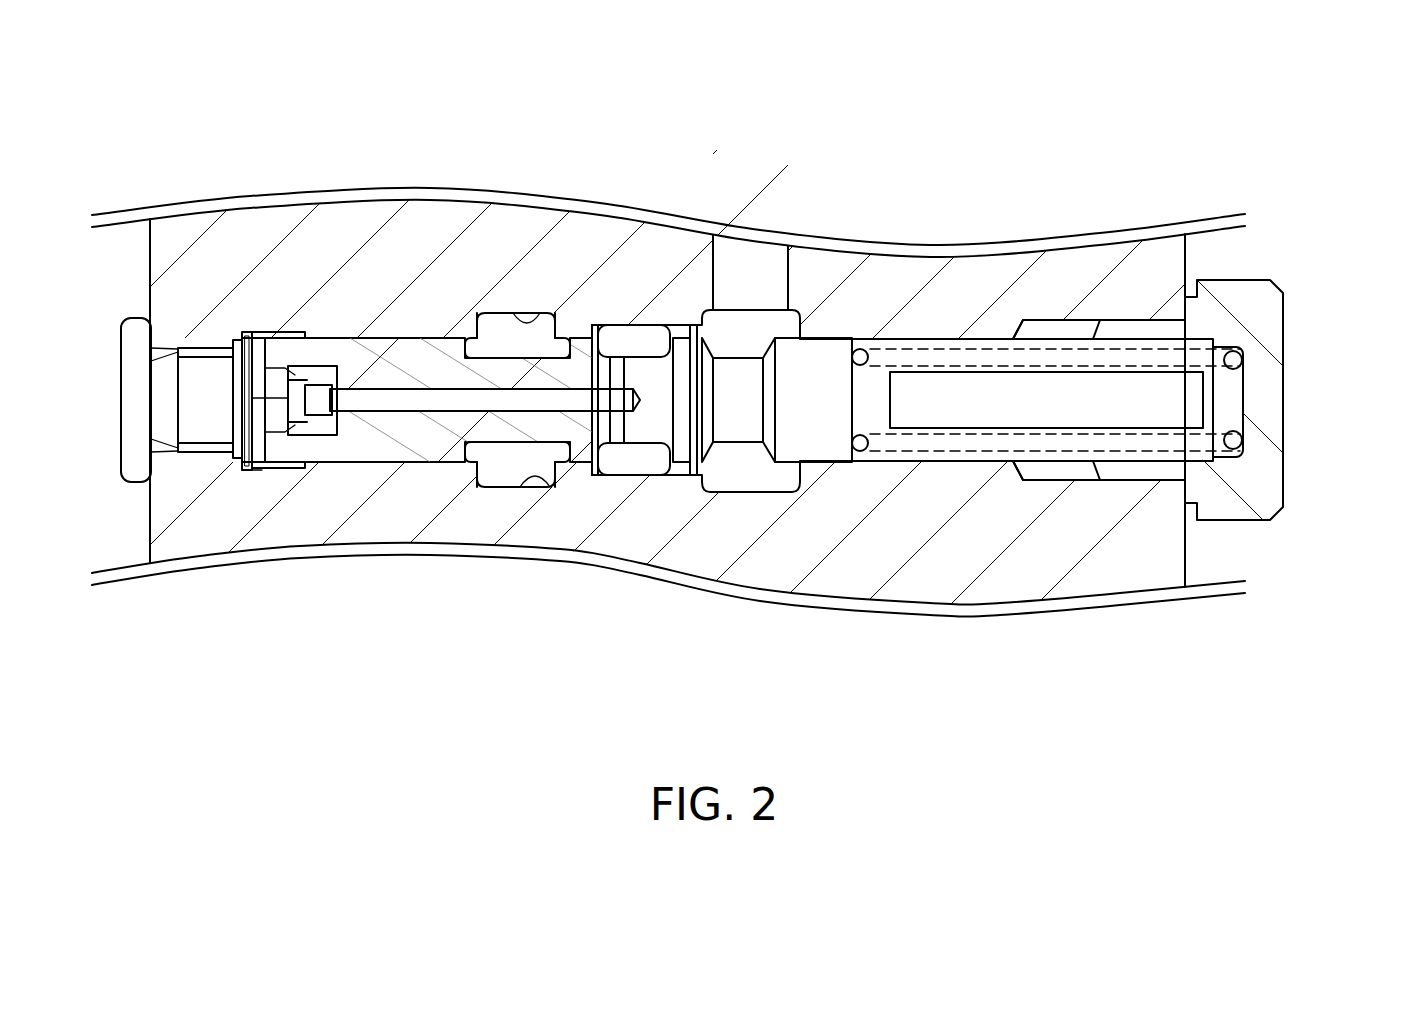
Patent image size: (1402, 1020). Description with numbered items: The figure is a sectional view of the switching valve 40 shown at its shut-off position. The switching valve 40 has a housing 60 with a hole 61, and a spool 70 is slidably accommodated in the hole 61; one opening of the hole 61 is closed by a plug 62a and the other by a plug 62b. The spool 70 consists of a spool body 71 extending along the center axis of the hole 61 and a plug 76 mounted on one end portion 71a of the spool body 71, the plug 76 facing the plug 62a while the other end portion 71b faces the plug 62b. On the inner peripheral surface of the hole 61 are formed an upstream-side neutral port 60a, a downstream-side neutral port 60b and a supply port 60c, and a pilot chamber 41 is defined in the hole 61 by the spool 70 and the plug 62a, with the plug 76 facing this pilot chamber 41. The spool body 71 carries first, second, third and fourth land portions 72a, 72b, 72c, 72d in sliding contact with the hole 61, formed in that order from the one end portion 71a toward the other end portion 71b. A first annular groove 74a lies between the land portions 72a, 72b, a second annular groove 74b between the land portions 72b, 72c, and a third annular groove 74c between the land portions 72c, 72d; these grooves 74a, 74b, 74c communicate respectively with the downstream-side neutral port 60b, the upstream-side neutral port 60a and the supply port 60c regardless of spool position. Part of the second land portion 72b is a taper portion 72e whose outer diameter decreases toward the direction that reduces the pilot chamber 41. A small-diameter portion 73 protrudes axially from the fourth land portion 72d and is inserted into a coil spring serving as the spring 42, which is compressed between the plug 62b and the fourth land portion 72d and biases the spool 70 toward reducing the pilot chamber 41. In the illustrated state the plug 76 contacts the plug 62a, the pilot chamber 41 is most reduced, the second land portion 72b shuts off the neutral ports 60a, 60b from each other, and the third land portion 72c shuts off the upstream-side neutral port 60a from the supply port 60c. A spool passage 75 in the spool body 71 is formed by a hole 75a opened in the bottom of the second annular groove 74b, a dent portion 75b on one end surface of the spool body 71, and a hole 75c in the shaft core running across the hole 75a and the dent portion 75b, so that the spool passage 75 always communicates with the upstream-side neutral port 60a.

The switching valve 40 is at (180, 128).
The pilot chamber 41 is at (265, 332).
The spring 42 is at (1233, 351).
The housing 60 is at (179, 540).
The upstream-side neutral port 60a is at (638, 478).
The downstream-side neutral port 60b is at (503, 312).
The supply port 60c is at (765, 306).
The hole 61 is at (548, 444).
The plug 62a is at (130, 395).
The plug 62b is at (1272, 400).
The spool 70 is at (363, 668).
The spool body 71 is at (317, 467).
The one end portion 71a is at (238, 465).
The other end portion 71b is at (1207, 427).
The first land portion 72a is at (400, 352).
The second land portion 72b is at (585, 350).
The third land portion 72c is at (688, 352).
The fourth land portion 72d is at (828, 352).
The taper portion 72e is at (543, 318).
The small-diameter portion 73 is at (932, 393).
The first annular groove 74a is at (490, 326).
The second annular groove 74b is at (648, 443).
The third annular groove 74c is at (735, 330).
The spool passage 75 is at (415, 414).
The hole 75a is at (587, 434).
The dent portion 75b is at (343, 416).
The hole 75c is at (503, 398).
The plug 76 is at (260, 467).